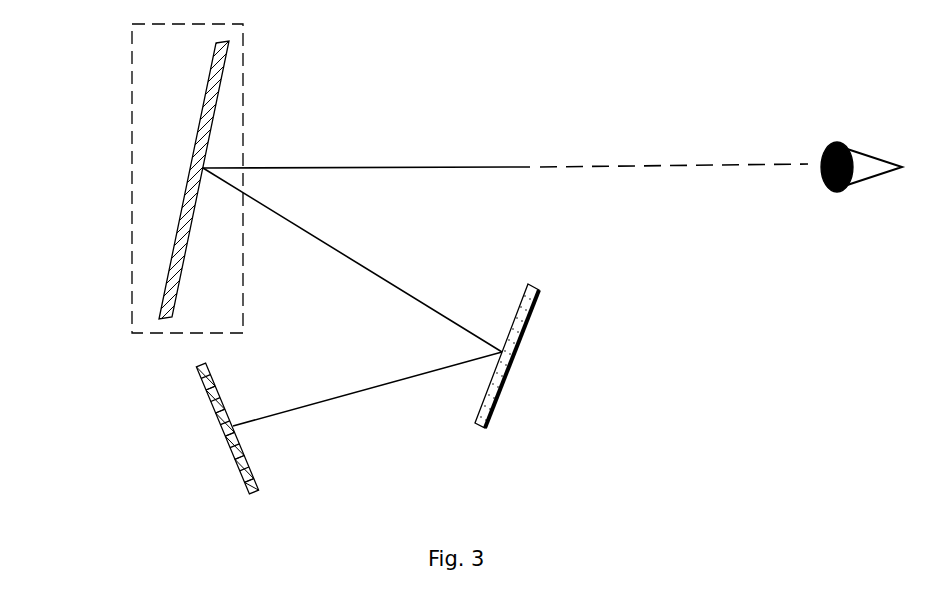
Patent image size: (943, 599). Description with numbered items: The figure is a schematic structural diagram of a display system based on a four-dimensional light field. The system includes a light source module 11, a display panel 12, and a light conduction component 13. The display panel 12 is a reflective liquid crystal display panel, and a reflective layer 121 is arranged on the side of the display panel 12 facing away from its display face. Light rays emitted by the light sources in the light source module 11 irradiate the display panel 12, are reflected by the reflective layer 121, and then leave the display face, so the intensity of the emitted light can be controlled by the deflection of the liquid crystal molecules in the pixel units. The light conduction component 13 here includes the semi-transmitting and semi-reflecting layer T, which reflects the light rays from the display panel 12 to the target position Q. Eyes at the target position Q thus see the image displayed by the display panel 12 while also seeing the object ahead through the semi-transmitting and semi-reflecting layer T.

The semi-transmitting and semi-reflecting layer T is at (207, 94).
The light conduction component 13 is at (133, 200).
The light source module 11 is at (215, 407).
The display panel 12 is at (511, 378).
The reflective layer 121 is at (520, 343).
The target position Q is at (838, 145).